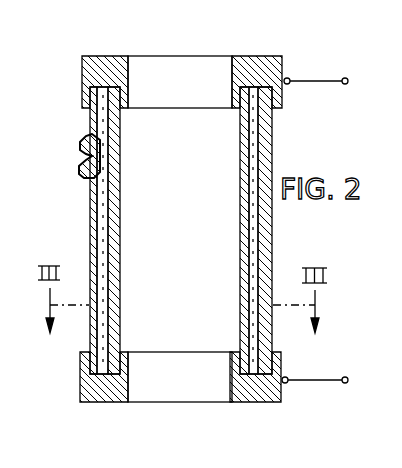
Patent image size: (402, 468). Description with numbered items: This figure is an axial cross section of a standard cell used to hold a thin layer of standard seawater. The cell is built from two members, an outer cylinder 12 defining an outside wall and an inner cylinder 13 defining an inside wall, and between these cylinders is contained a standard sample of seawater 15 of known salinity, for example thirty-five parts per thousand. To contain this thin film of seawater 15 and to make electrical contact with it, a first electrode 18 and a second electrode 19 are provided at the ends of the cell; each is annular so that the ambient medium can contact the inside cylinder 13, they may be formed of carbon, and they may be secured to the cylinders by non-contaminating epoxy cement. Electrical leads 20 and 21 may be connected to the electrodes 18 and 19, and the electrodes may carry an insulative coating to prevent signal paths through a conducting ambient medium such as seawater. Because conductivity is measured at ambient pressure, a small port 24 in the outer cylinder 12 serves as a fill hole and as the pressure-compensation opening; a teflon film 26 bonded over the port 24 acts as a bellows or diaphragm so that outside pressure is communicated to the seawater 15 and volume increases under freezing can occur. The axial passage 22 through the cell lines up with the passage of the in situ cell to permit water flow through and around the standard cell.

The cylinder 12 is at (93, 203).
The cylinder 13 is at (118, 222).
The standard sample of seawater 15 is at (102, 248).
The first electrode 18 is at (268, 57).
The second electrode 19 is at (84, 373).
The electrical lead 20 is at (311, 80).
The electrical lead 21 is at (319, 378).
The axial passage 22 is at (170, 72).
The port 24 is at (95, 153).
The teflon film 26 is at (80, 136).